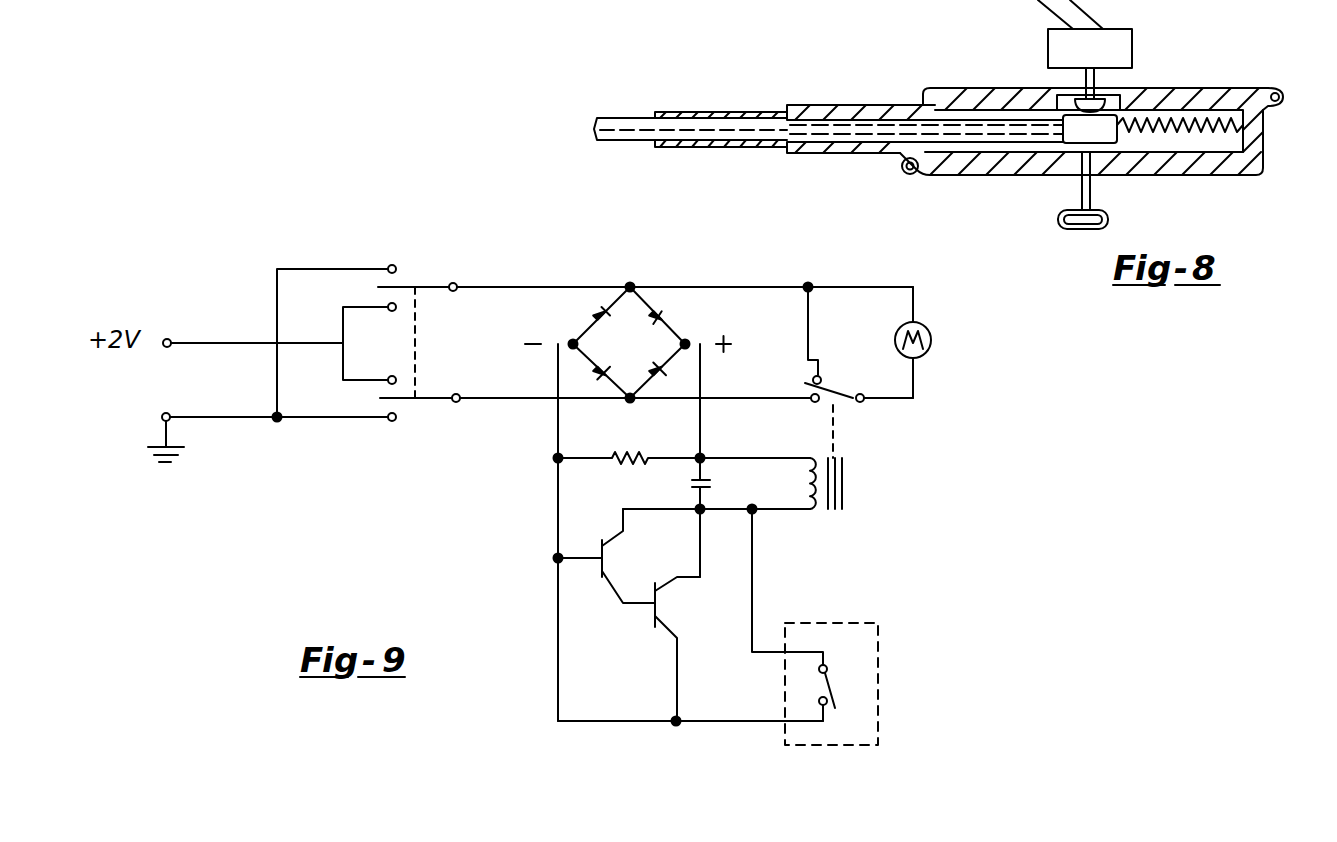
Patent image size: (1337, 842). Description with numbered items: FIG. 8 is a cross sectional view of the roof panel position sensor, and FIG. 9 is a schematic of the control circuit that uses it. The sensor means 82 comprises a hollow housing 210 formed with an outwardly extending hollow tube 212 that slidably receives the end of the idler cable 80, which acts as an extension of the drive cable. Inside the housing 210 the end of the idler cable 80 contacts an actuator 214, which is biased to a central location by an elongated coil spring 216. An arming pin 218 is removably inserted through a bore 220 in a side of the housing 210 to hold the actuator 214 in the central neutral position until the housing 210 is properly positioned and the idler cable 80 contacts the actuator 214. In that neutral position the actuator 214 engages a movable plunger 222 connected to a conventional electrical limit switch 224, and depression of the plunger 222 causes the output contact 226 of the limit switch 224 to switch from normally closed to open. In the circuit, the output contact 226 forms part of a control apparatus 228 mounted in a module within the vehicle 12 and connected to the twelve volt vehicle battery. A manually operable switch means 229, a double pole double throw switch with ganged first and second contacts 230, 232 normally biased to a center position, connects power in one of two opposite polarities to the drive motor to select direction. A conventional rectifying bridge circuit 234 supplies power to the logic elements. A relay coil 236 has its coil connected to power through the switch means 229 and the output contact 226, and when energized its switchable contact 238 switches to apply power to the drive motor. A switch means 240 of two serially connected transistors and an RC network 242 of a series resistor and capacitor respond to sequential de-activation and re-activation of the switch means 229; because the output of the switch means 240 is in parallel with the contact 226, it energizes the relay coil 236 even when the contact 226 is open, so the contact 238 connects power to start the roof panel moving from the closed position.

In FIG. 9, the vehicle 12 is at (933, 341).
In FIG. 8, the idler cable 80 is at (641, 92).
In FIG. 8, the sensor means 82 is at (1028, 197).
In FIG. 8, the housing 210 is at (1265, 140).
In FIG. 8, the hollow tube 212 is at (863, 124).
In FIG. 8, the actuator 214 is at (1103, 127).
In FIG. 8, the coil spring 216 is at (1190, 133).
In FIG. 8, the arming pin 218 is at (1110, 222).
In FIG. 8, the bore 220 is at (1090, 165).
In FIG. 8, the plunger 222 is at (1040, 110).
In FIG. 8, the limit switch 224 is at (1135, 48).
In FIG. 9, the limit switch 224 is at (850, 624).
In FIG. 9, the output contact 226 is at (834, 695).
In FIG. 9, the control apparatus 228 is at (687, 253).
In FIG. 9, the switch means 229 is at (457, 312).
In FIG. 9, the first contact 230 is at (428, 288).
In FIG. 9, the second contact 232 is at (443, 398).
In FIG. 9, the rectifying bridge circuit 234 is at (675, 330).
In FIG. 9, the relay coil 236 is at (845, 490).
In FIG. 9, the switchable contact 238 is at (842, 392).
In FIG. 9, the switch means 240 is at (620, 587).
In FIG. 9, the RC network 242 is at (687, 481).